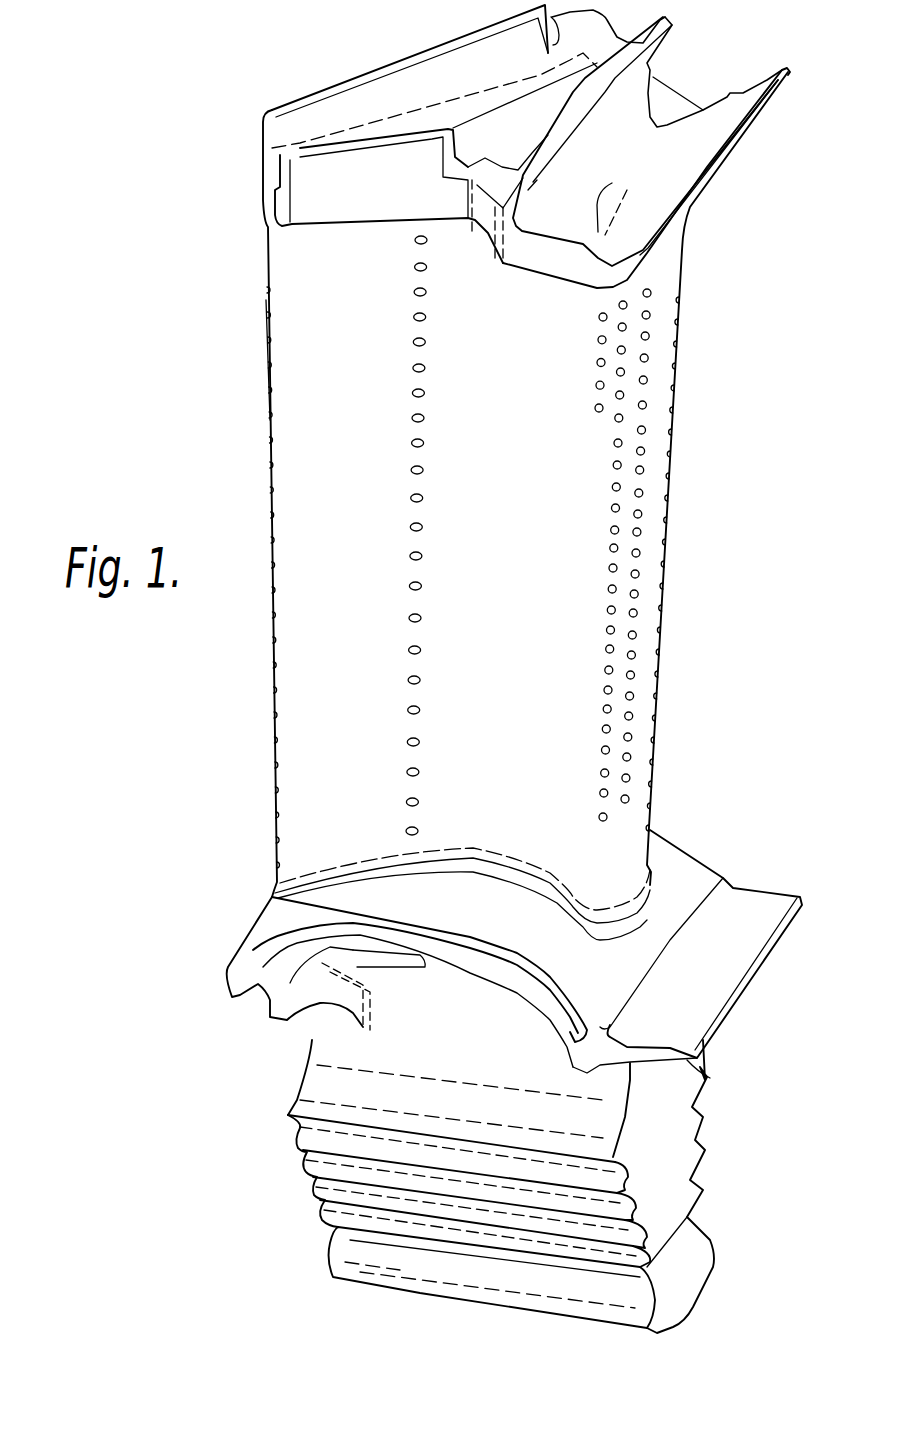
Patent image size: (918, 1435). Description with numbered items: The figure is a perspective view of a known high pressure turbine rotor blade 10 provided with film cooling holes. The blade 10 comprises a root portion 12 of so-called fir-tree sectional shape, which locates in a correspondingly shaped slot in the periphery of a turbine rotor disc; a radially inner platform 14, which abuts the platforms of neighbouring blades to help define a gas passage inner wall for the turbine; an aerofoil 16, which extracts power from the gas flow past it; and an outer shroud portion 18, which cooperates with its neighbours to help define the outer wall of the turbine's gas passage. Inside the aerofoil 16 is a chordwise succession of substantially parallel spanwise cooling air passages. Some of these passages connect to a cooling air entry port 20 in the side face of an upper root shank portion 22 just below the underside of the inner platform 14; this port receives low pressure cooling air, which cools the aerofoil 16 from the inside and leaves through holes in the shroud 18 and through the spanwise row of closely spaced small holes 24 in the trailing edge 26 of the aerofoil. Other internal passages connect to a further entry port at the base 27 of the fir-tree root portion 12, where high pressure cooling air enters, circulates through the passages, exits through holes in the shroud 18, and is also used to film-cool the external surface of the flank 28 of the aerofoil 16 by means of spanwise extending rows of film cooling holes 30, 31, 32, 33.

The turbine blade 10 is at (227, 235).
The root portion 12 is at (307, 1157).
The radially inner platform 14 is at (270, 923).
The aerofoil 16 is at (587, 600).
The outer shroud portion 18 is at (277, 108).
The cooling air entry port 20 is at (397, 967).
The upper root shank portion 22 is at (457, 1046).
The small holes 24 is at (270, 477).
The trailing edge 26 is at (270, 353).
The base 27 is at (513, 1312).
The flank 28 is at (521, 502).
The film cooling holes 30 is at (650, 292).
The film cooling holes 31 is at (626, 327).
The film cooling holes 32 is at (604, 364).
The film cooling holes 33 is at (424, 395).